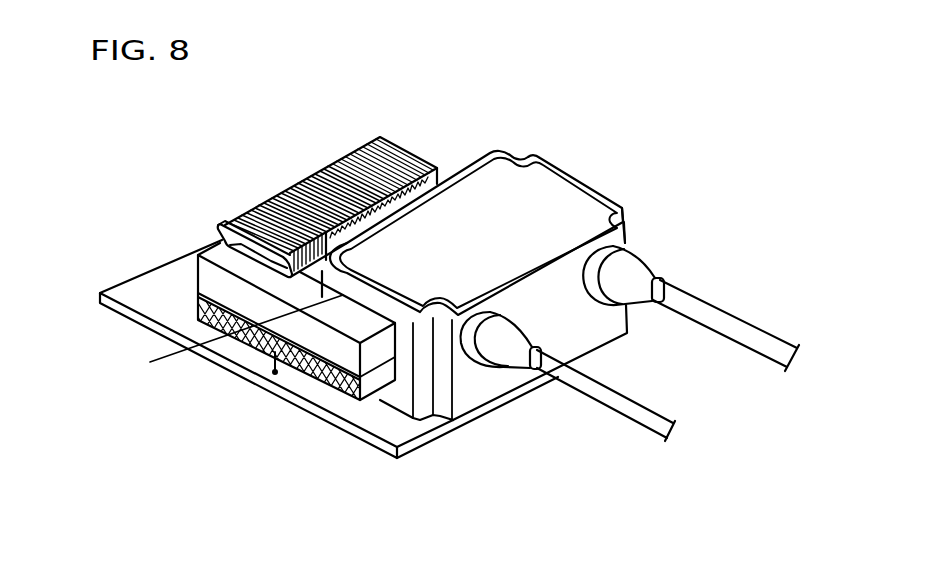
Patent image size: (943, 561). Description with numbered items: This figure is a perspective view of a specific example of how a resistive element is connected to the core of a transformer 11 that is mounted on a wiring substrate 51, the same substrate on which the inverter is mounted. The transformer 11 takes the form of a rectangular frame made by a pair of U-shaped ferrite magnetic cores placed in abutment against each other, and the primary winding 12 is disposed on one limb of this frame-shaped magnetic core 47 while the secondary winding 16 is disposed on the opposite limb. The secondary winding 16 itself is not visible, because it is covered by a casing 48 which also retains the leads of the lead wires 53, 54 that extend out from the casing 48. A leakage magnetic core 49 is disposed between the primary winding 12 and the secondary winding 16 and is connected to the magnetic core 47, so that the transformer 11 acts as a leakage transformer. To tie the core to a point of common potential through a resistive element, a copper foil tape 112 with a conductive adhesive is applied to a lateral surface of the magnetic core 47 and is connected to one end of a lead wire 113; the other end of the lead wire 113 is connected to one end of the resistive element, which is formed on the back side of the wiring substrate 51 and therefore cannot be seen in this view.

The transformer 11 is at (580, 142).
The primary winding 12 is at (330, 180).
The secondary winding 16 is at (543, 190).
The magnetic core 47 is at (228, 265).
The casing 48 is at (627, 235).
The leakage magnetic core 49 is at (230, 341).
The wiring substrate 51 is at (307, 404).
The lead wires 53 is at (697, 318).
The lead wires 54 is at (627, 412).
The copper foil tape with a conductive adhesive 112 is at (353, 400).
The lead wire 113 is at (280, 356).